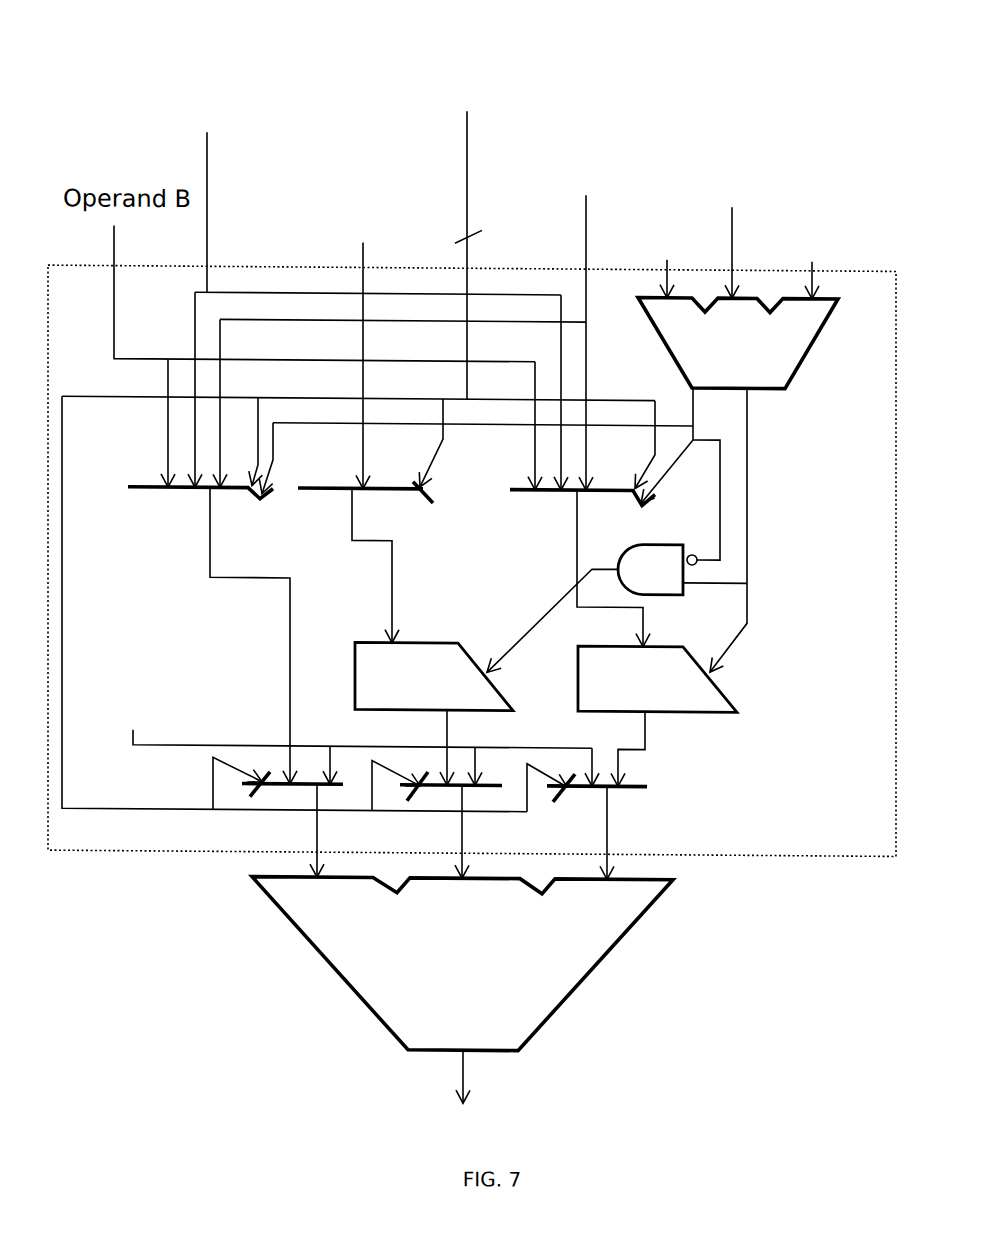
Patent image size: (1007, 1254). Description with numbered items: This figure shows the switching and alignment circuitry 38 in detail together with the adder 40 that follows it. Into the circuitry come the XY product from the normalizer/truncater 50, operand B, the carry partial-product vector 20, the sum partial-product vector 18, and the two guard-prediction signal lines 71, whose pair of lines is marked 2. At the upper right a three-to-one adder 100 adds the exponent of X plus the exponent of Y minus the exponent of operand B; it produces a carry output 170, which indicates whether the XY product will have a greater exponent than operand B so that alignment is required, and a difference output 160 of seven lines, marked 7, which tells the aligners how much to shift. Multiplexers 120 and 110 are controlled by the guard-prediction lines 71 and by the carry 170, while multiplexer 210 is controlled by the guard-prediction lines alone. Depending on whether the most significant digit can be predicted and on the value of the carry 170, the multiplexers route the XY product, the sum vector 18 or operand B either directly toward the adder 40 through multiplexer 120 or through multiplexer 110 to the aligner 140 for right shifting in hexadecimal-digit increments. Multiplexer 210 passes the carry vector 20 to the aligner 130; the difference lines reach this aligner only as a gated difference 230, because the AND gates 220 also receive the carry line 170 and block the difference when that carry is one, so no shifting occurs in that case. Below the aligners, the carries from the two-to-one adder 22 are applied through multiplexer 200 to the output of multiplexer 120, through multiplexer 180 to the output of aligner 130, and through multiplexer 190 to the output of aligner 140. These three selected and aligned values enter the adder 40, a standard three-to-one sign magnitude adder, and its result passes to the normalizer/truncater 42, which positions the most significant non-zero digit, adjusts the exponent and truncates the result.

The normalizer/truncater 50 is at (305, 277).
The carry vector 20 is at (430, 179).
The guard prediction signal lines 71 is at (466, 229).
The sum vector 18 is at (653, 123).
The guard-predict signal bus (two signals) 2 is at (477, 232).
The three-to-one adder 100 is at (802, 363).
The carry output 170 is at (682, 405).
The carry line to AND gate 7 is at (735, 437).
The difference output 160 is at (748, 556).
The multiplexer 120 is at (147, 485).
The multiplexer 210 is at (360, 482).
The multiplexer 110 is at (513, 488).
The AND gates 220 is at (685, 539).
The gated difference 230 is at (522, 630).
The aligner 130 is at (418, 641).
The aligner 140 is at (730, 696).
The two-to-one adder 22 is at (334, 713).
The multiplexer 200 is at (303, 788).
The multiplexer 180 is at (450, 797).
The multiplexer 190 is at (592, 794).
The switching and alignment circuitry 38 is at (790, 853).
The adder 40 is at (580, 970).
The normalizer/truncater 42 is at (465, 1090).